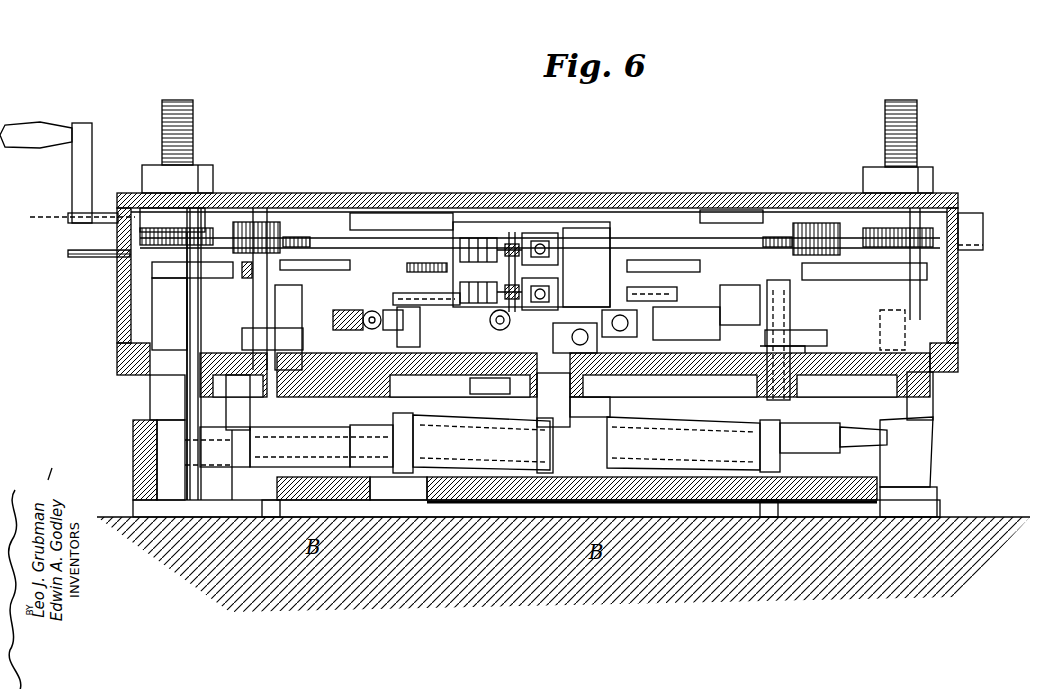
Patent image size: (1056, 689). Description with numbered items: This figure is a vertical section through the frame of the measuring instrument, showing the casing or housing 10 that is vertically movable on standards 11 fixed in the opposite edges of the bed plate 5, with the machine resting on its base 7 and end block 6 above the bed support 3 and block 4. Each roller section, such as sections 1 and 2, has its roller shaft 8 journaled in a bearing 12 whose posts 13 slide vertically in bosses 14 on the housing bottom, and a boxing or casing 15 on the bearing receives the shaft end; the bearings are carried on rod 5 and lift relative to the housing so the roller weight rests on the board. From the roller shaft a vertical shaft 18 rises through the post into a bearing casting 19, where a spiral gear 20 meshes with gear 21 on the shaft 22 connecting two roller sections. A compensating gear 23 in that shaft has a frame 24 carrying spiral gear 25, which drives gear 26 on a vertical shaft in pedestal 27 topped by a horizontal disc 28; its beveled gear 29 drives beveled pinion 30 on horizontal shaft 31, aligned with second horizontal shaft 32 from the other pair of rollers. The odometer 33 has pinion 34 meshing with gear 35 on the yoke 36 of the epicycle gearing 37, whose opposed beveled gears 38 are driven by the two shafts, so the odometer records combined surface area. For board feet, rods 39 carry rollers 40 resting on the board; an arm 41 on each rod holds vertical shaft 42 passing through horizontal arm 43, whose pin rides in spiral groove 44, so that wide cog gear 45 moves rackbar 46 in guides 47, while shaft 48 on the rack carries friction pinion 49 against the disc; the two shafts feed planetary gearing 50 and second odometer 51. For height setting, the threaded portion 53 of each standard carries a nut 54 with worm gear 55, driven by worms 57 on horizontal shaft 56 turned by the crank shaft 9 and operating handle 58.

The roller section 1 is at (150, 468).
The roller section 2 is at (370, 530).
The block 3 is at (420, 470).
The base block 4 is at (480, 470).
The bed plate 5 is at (228, 465).
The end block 6 is at (920, 500).
The ground/base 7 is at (530, 500).
The roller shaft 8 is at (262, 140).
The crank shaft 9 is at (93, 200).
The casing or housing 10 is at (980, 295).
The standards 11 is at (935, 350).
The bearing 12 is at (165, 410).
The post 13 is at (550, 380).
The boss 14 is at (438, 421).
The boxing or casing 15 is at (133, 497).
The vertical shaft 18 is at (905, 300).
The bearing casting 19 is at (140, 365).
The spiral gear 20 is at (356, 319).
The spiral gear 21 is at (445, 260).
The shaft 22 is at (463, 337).
The compensating gear 23 is at (733, 297).
The frame of the compensating gear 24 is at (768, 281).
The spiral gear 25 is at (743, 281).
The spiral gear 26 is at (514, 341).
The pedestal or standard 27 is at (485, 340).
The horizontal disc 28 is at (470, 238).
The beveled gear 29 is at (355, 245).
The beveled pinion 30 is at (415, 262).
The horizontal shaft 31 is at (467, 183).
The second horizontal shaft 32 is at (640, 257).
The odometer 33 is at (510, 321).
The pinion 34 is at (512, 232).
The gear 35 is at (542, 240).
The frame or yoke 36 is at (611, 268).
The planetary or epicycle gearing 37 is at (490, 385).
The beveled gears 38 is at (562, 272).
The rods 39 is at (200, 438).
The rollers 40 is at (265, 502).
The arm 41 is at (242, 335).
The vertical shaft 42 is at (838, 190).
The second horizontal arm 43 is at (940, 183).
The spiral groove 44 is at (260, 318).
The wide cog gear 45 is at (270, 222).
The rackbar 46 is at (300, 237).
The guides 47 is at (340, 238).
The shaft 48 is at (698, 188).
The friction pinion 49 is at (365, 238).
The planetary or epicycle gearing 50 is at (560, 228).
The second odometer 51 is at (505, 240).
The threaded portion 53 is at (195, 150).
The nut 54 is at (214, 172).
The worm gear 55 is at (130, 256).
The horizontal shaft 56 is at (240, 230).
The worms 57 is at (170, 252).
The operating handle 58 is at (90, 150).